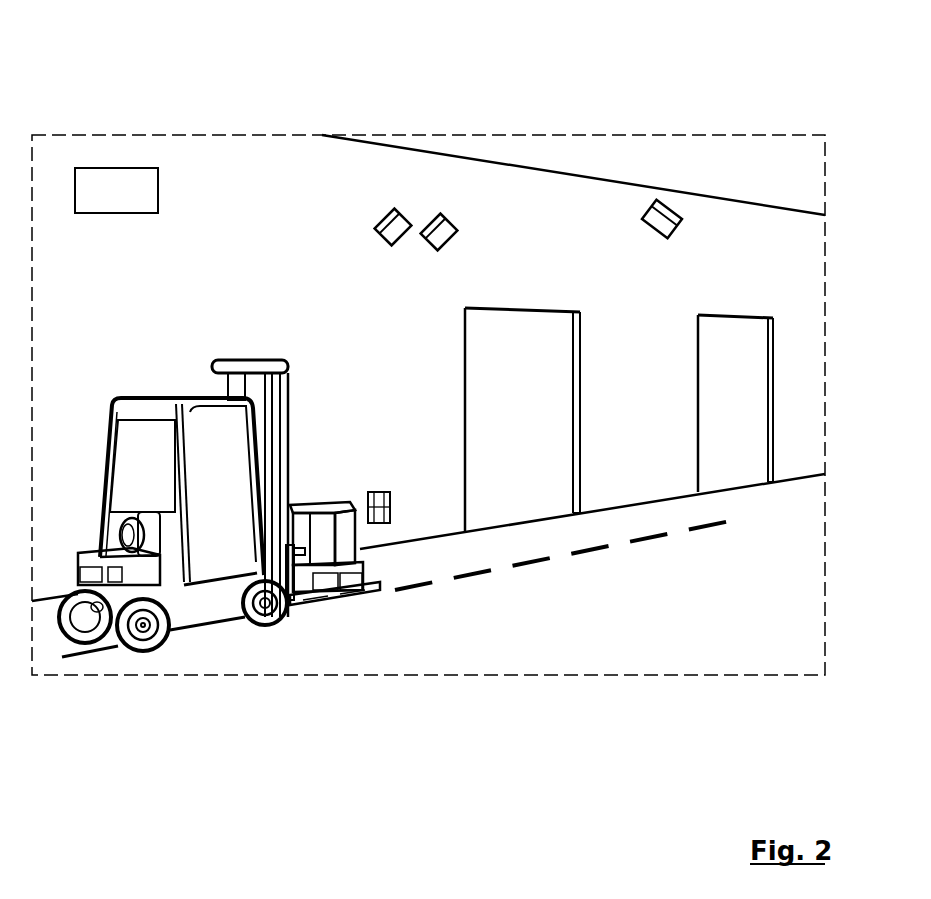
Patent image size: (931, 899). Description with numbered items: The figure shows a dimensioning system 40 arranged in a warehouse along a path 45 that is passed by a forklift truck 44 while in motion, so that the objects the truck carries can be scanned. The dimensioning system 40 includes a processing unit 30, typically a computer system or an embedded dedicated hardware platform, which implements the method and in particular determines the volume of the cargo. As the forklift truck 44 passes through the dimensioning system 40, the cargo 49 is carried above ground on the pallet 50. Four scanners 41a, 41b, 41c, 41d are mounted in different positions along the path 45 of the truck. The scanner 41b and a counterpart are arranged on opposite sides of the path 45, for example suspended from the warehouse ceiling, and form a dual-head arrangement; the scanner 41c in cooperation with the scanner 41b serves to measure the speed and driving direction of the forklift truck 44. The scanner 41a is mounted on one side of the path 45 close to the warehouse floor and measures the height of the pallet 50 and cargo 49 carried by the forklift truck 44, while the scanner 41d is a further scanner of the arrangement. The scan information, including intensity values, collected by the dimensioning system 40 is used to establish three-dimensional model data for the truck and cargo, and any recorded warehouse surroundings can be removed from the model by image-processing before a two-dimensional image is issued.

The processing unit 30 is at (120, 167).
The dimensioning system 40 is at (779, 142).
The scanner 41a is at (367, 503).
The scanner 41b is at (385, 212).
The scanner 41c is at (437, 212).
The scanner 41d is at (660, 190).
The forklift truck 44 is at (290, 551).
The path 45 is at (577, 560).
The cargo 49 is at (321, 553).
The pallet 50 is at (373, 595).